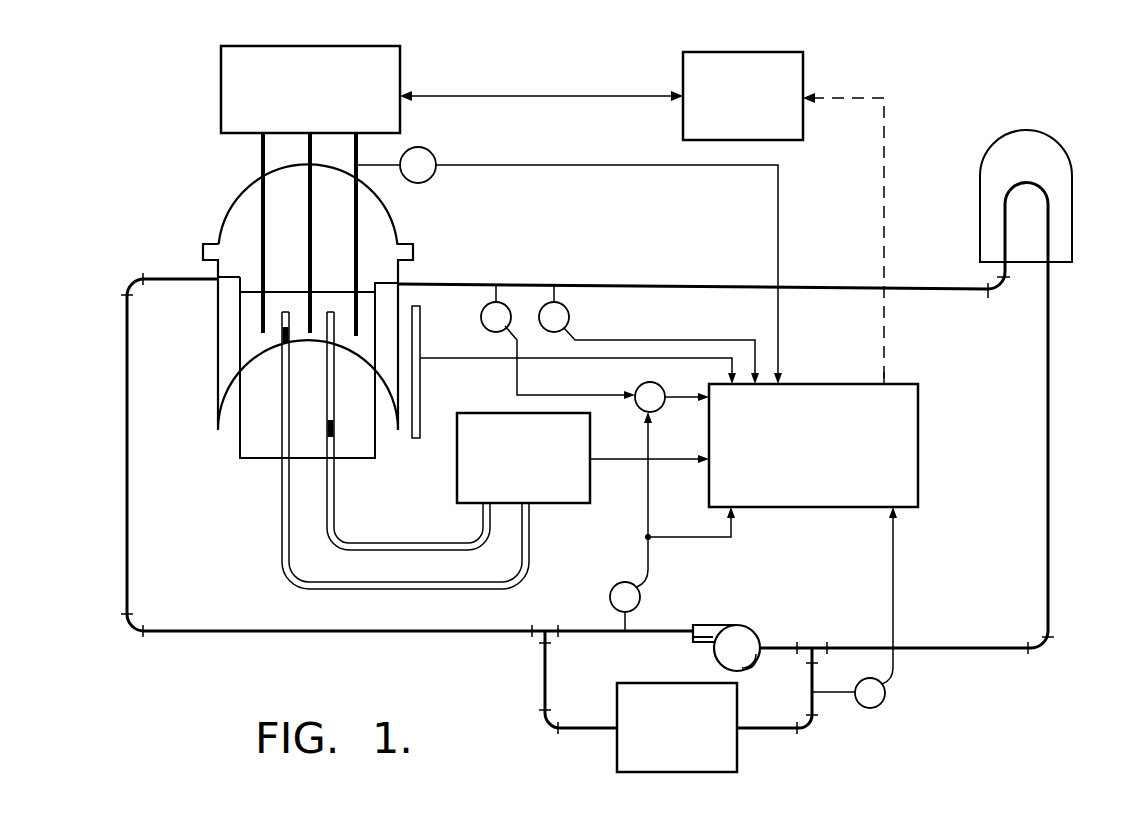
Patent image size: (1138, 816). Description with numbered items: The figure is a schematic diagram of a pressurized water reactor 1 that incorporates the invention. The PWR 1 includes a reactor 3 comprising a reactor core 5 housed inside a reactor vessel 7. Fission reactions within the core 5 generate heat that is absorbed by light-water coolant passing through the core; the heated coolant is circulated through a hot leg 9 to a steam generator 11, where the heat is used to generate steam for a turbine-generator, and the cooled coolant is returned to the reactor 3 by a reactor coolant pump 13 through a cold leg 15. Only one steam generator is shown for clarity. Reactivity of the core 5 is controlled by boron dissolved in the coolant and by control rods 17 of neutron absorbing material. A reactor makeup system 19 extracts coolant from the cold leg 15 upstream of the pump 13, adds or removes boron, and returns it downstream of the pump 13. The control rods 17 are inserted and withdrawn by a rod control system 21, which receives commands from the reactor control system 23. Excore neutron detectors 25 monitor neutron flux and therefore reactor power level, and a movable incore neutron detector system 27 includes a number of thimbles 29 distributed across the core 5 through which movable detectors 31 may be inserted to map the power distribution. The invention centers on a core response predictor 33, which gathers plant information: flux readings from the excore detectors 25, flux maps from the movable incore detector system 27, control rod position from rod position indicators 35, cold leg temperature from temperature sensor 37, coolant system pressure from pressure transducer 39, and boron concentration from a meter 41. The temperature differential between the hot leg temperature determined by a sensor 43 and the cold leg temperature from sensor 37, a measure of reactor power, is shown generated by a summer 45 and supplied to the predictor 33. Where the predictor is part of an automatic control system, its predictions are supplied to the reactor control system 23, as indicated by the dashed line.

The pressurized water reactor 1 is at (537, 232).
The reactor 3 is at (192, 230).
The reactor core 5 is at (258, 383).
The reactor vessel 7 is at (218, 336).
The hot leg 9 is at (655, 280).
The steam generator 11 is at (1065, 148).
The reactor coolant pump 13 is at (728, 625).
The cold leg 15 is at (592, 630).
The control rods 17 is at (350, 263).
The reactor makeup system 19 is at (737, 755).
The rod control system 21 is at (400, 62).
The reactor control system 23 is at (803, 62).
The excore neutron detectors 25 is at (420, 330).
The movable incore neutron detector system 27 is at (480, 413).
The thimbles 29 is at (327, 490).
The movable detectors 31 is at (287, 337).
The core response predictor 33 is at (918, 405).
The rod position indicators 35 is at (432, 150).
The temperature sensor 37 is at (640, 597).
The pressure transducer 39 is at (569, 313).
The meter 41 is at (885, 690).
The sensor 43 is at (481, 312).
The summer 45 is at (640, 385).